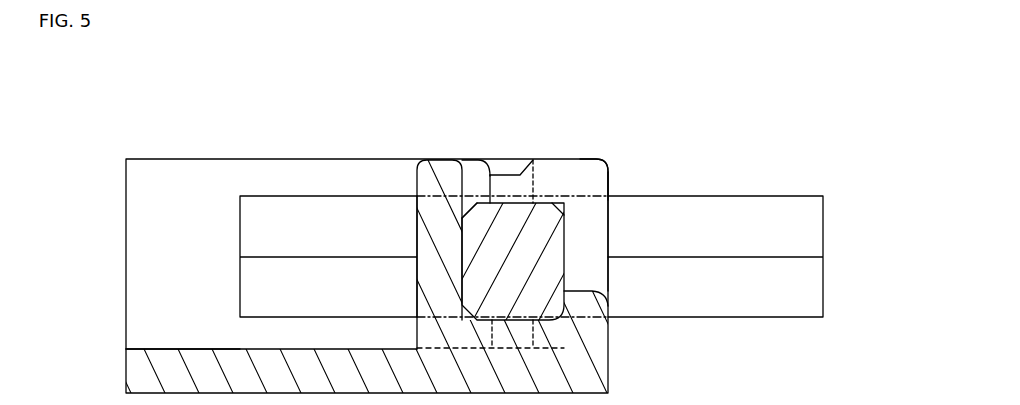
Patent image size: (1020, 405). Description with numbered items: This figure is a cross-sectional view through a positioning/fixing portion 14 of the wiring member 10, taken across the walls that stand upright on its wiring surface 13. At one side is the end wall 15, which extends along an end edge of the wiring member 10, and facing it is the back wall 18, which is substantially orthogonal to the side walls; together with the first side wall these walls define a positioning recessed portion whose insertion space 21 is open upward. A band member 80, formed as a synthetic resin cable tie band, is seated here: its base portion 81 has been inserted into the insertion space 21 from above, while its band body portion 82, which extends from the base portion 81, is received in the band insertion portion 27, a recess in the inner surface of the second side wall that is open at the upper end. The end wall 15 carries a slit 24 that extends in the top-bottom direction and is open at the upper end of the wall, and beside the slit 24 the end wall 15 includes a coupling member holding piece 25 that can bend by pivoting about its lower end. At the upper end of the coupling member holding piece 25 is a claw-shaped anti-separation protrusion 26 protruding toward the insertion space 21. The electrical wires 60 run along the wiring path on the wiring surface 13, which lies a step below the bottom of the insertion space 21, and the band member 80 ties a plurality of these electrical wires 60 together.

The wiring member 10 is at (247, 159).
The wiring surface 13 is at (202, 349).
The positioning/fixing portion 14 is at (319, 117).
The end wall 15 is at (608, 240).
The back wall 18 is at (437, 184).
The insertion space 21 is at (472, 280).
The slit 24 is at (586, 290).
The coupling member holding piece 25 is at (598, 196).
The anti-separation protrusion 26 is at (533, 178).
The band insertion portion 27 is at (502, 172).
The electrical wires 60 is at (768, 282).
The band member 80 is at (478, 178).
The base portion 81 is at (536, 228).
The band body portion 82 is at (518, 180).